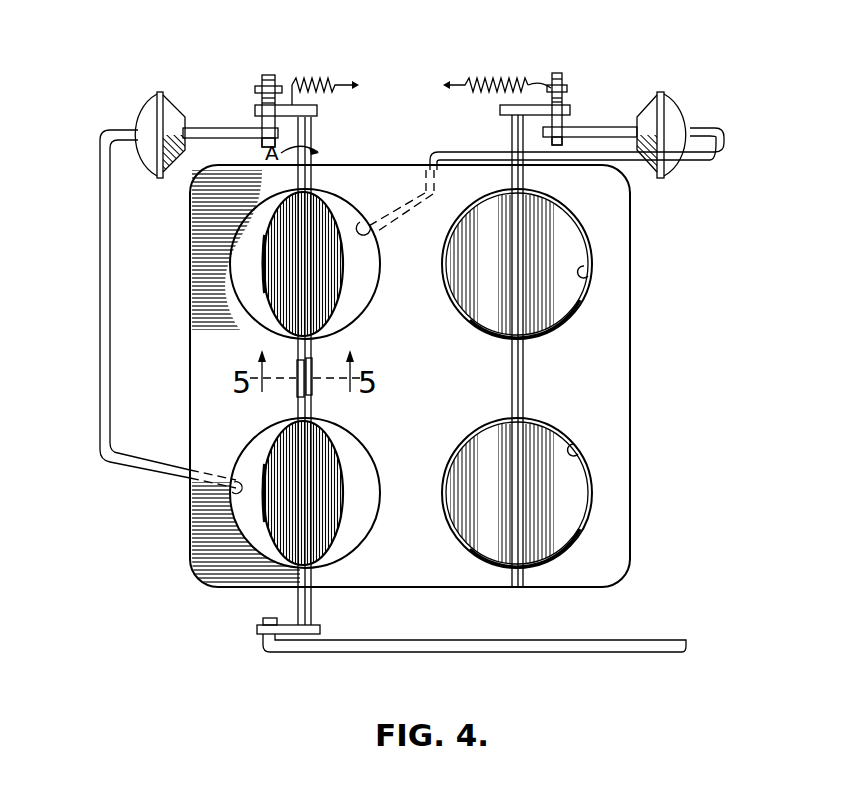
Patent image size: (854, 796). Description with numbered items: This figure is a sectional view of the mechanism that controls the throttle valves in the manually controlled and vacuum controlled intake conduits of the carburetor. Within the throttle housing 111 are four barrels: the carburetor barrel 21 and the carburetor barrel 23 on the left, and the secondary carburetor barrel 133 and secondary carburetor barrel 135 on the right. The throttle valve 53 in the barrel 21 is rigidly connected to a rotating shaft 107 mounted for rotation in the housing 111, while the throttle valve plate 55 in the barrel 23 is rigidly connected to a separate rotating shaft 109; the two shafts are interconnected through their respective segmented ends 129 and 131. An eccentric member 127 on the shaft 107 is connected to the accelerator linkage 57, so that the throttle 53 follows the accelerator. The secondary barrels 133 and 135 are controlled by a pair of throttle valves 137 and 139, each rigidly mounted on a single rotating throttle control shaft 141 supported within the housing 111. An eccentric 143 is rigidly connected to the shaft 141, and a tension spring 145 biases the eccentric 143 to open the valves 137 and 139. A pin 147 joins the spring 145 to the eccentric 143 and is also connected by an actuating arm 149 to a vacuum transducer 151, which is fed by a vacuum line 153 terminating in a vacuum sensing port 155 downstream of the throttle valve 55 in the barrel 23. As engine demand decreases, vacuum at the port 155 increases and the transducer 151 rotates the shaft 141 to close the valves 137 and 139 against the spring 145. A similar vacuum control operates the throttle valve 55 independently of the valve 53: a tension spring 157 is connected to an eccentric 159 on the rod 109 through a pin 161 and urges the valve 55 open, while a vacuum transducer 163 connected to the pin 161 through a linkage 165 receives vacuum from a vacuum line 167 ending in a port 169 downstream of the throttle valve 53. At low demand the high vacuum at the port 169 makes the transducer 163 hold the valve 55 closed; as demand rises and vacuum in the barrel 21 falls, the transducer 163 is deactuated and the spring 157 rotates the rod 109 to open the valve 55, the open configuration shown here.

The carburetor barrel 21 is at (248, 452).
The carburetor barrel 23 is at (245, 298).
The throttle valve 53 is at (262, 500).
The throttle valve plate 55 is at (262, 275).
The accelerator linkage 57 is at (462, 640).
The rotating shaft 107 is at (312, 613).
The rotating shaft 109 is at (313, 143).
The throttle housing 111 is at (620, 522).
The eccentric member 127 is at (273, 624).
The segmented end 129 is at (312, 383).
The segmented end 131 is at (298, 383).
The secondary carburetor barrel 133 is at (578, 448).
The secondary carburetor barrel 135 is at (590, 270).
The secondary throttle valve 137 is at (573, 242).
The secondary throttle valve 139 is at (570, 485).
The throttle control shaft 141 is at (520, 375).
The eccentric 143 is at (540, 106).
The tension spring 145 is at (505, 74).
The pin 147 is at (566, 90).
The actuating arm 149 is at (610, 126).
The vacuum transducer 151 is at (673, 102).
The vacuum line 153 is at (437, 152).
The vacuum sensing port 155 is at (357, 218).
The tension spring 157 is at (328, 78).
The eccentric 159 is at (282, 105).
The pin 161 is at (262, 98).
The vacuum transducer 163 is at (150, 98).
The linkage 165 is at (212, 127).
The vacuum line 167 is at (100, 273).
The port 169 is at (235, 488).